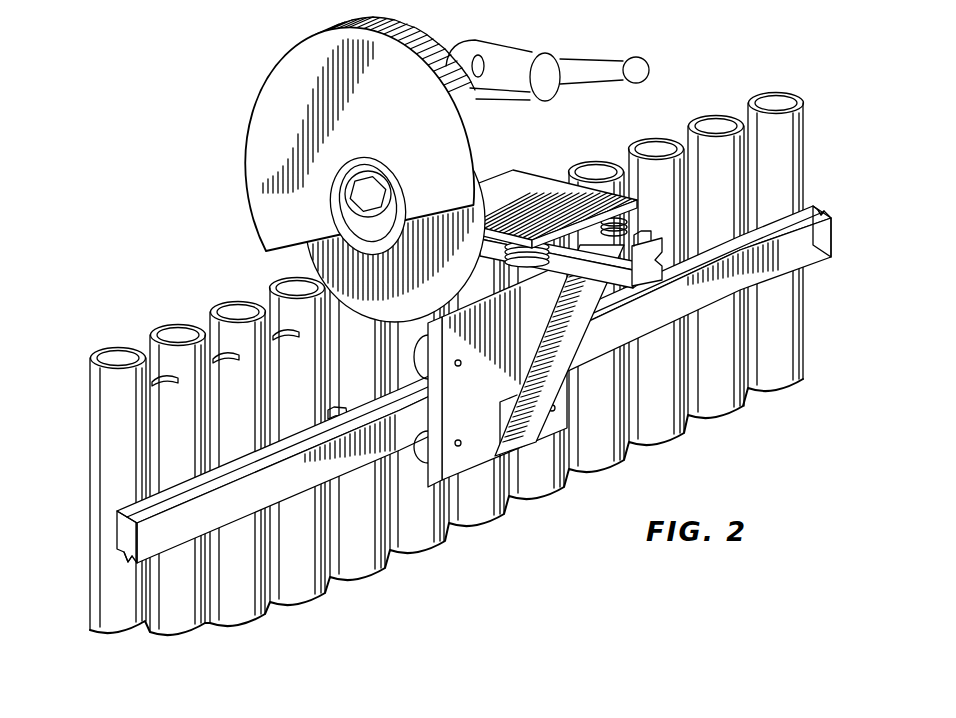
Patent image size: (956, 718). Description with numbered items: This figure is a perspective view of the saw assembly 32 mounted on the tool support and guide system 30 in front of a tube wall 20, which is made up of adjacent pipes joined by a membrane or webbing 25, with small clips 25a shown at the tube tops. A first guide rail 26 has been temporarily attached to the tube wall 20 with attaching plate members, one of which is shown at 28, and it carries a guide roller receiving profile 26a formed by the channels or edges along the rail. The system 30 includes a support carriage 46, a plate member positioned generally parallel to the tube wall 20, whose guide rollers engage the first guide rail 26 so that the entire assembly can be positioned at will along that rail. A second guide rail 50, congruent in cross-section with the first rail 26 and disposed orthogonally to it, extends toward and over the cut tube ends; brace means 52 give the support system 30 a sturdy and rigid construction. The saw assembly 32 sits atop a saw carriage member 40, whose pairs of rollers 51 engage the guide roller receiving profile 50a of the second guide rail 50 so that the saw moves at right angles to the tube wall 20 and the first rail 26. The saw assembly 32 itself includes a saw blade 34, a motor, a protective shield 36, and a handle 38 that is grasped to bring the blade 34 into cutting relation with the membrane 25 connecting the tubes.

The tube wall 20 is at (475, 357).
The membrane or webbing 25 is at (153, 437).
The tube clip 25a is at (147, 347).
The guide rail 26 is at (489, 386).
The guide roller receiving profile 26a is at (127, 558).
The attaching plate member 28 is at (312, 422).
The tool support and guide system 30 is at (538, 381).
The saw assembly 32 is at (415, 169).
The saw blade 34 is at (350, 263).
The protective shield 36 is at (287, 73).
The handle 38 is at (590, 68).
The saw carriage member 40 is at (526, 183).
The support carriage 46 is at (463, 463).
The second guide rail 50 is at (648, 275).
The guide roller receiving profile 50a is at (578, 258).
The rollers 51 is at (518, 260).
The support or brace means 52 is at (517, 395).